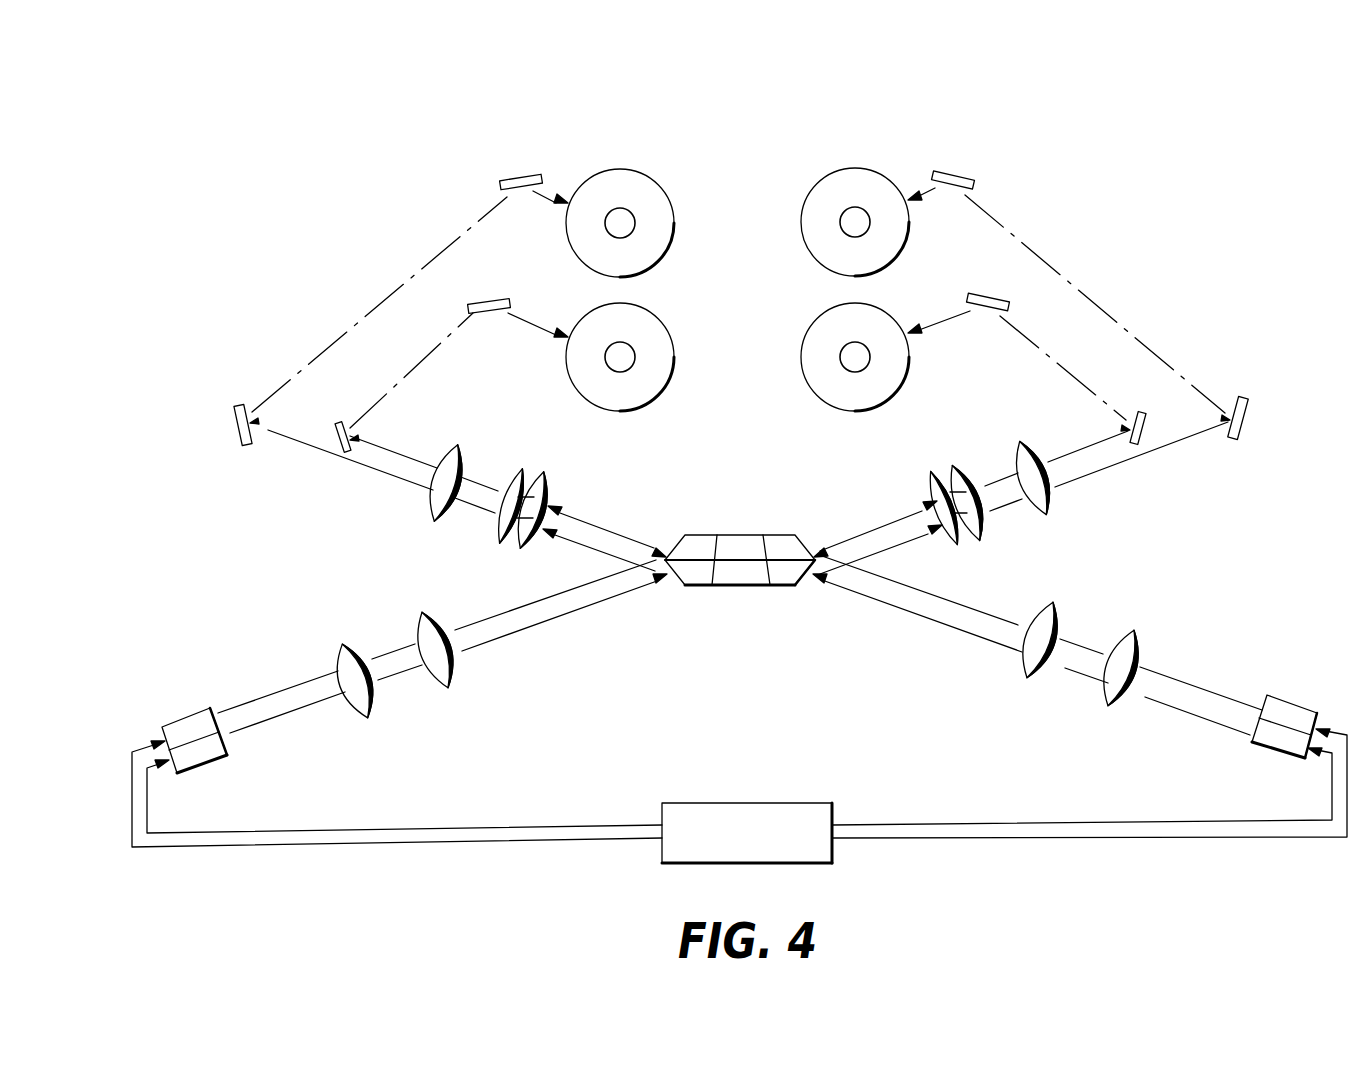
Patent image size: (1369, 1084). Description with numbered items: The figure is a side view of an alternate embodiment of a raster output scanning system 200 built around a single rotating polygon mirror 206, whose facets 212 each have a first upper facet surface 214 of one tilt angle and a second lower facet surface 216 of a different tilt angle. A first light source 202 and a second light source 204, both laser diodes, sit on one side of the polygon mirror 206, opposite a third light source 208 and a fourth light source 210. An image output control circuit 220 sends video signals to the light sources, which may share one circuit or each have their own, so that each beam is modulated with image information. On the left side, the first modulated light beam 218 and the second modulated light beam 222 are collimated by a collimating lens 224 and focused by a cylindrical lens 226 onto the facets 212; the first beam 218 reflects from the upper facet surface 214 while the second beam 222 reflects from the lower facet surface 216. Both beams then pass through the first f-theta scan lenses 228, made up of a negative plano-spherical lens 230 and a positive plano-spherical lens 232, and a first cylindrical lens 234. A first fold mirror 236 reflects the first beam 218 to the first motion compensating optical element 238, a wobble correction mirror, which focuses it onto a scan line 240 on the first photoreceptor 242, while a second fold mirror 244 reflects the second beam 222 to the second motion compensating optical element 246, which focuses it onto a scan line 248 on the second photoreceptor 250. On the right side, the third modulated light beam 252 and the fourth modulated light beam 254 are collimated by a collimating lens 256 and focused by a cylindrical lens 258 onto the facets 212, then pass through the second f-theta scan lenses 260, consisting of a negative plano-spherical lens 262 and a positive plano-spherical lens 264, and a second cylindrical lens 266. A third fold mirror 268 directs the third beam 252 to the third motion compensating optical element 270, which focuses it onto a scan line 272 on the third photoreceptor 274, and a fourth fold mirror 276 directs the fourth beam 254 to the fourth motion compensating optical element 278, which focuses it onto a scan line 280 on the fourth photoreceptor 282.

The raster output scanning system 200 is at (779, 120).
The first light source 202 is at (188, 720).
The second light source 204 is at (208, 755).
The rotating polygon mirror 206 is at (740, 574).
The third light source 208 is at (1293, 707).
The fourth light source 210 is at (1276, 740).
The facet 212 is at (790, 538).
The first upper facet surface 214 is at (679, 538).
The second lower facet surface 216 is at (672, 586).
The first modulated light beam 218 is at (337, 678).
The image output control circuit 220 is at (767, 846).
The second modulated light beam 222 is at (333, 688).
The collimating lens 224 is at (340, 665).
The cylindrical lens 226 is at (448, 680).
The first f-theta scan lenses 228 is at (531, 492).
The negative plano-spherical lens 230 is at (517, 456).
The positive plano-spherical lens 232 is at (503, 523).
The first cylindrical lens 234 is at (450, 452).
The first fold mirror 236 is at (340, 423).
The first motion compensating optical element 238 is at (497, 300).
The scan line 240 is at (566, 341).
The first photoreceptor 242 is at (664, 341).
The second fold mirror 244 is at (238, 440).
The second motion compensating optical element 246 is at (507, 178).
The scan line 248 is at (566, 207).
The second photoreceptor 250 is at (664, 208).
The third modulated light beam 252 is at (1148, 668).
The fourth modulated light beam 254 is at (1140, 690).
The collimating lens 256 is at (1135, 636).
The cylindrical lens 258 is at (1030, 680).
The second f-theta scan lenses 260 is at (956, 488).
The negative plano-spherical lens 262 is at (933, 490).
The positive plano-spherical lens 264 is at (980, 524).
The second cylindrical lens 266 is at (1050, 500).
The third fold mirror 268 is at (1145, 413).
The third motion compensating optical element 270 is at (979, 294).
The scan line 272 is at (910, 339).
The third photoreceptor 274 is at (815, 375).
The fourth fold mirror 276 is at (1240, 395).
The fourth motion compensating optical element 278 is at (966, 175).
The scan line 280 is at (909, 203).
The fourth photoreceptor 282 is at (813, 242).